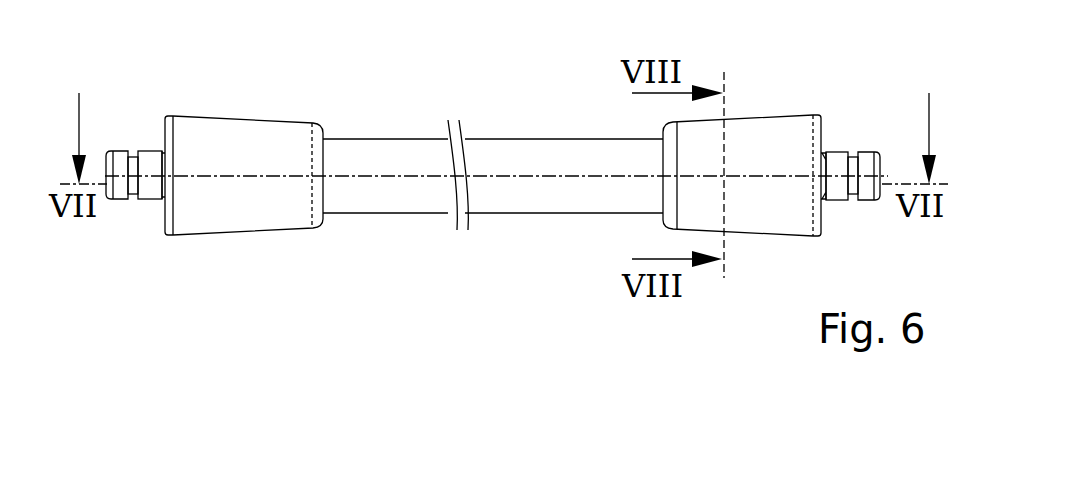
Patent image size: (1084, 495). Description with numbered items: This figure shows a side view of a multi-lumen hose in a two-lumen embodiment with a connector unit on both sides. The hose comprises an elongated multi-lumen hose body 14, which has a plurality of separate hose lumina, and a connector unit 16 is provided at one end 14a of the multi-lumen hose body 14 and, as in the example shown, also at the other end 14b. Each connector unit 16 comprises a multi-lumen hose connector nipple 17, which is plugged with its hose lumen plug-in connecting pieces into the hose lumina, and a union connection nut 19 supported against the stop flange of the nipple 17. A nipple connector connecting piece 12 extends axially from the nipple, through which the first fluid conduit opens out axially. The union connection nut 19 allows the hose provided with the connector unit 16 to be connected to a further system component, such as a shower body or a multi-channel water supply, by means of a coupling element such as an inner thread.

The nipple connector connecting piece 12 is at (120, 200).
The multi-lumen hose body 14 is at (517, 198).
The one end of the multi-lumen hose body 14a is at (658, 213).
The other end of the multi-lumen hose body 14b is at (325, 215).
The connector unit 16 is at (493, 182).
The multi-lumen hose connector nipple 17 is at (826, 193).
The union connection nut 19 is at (220, 130).